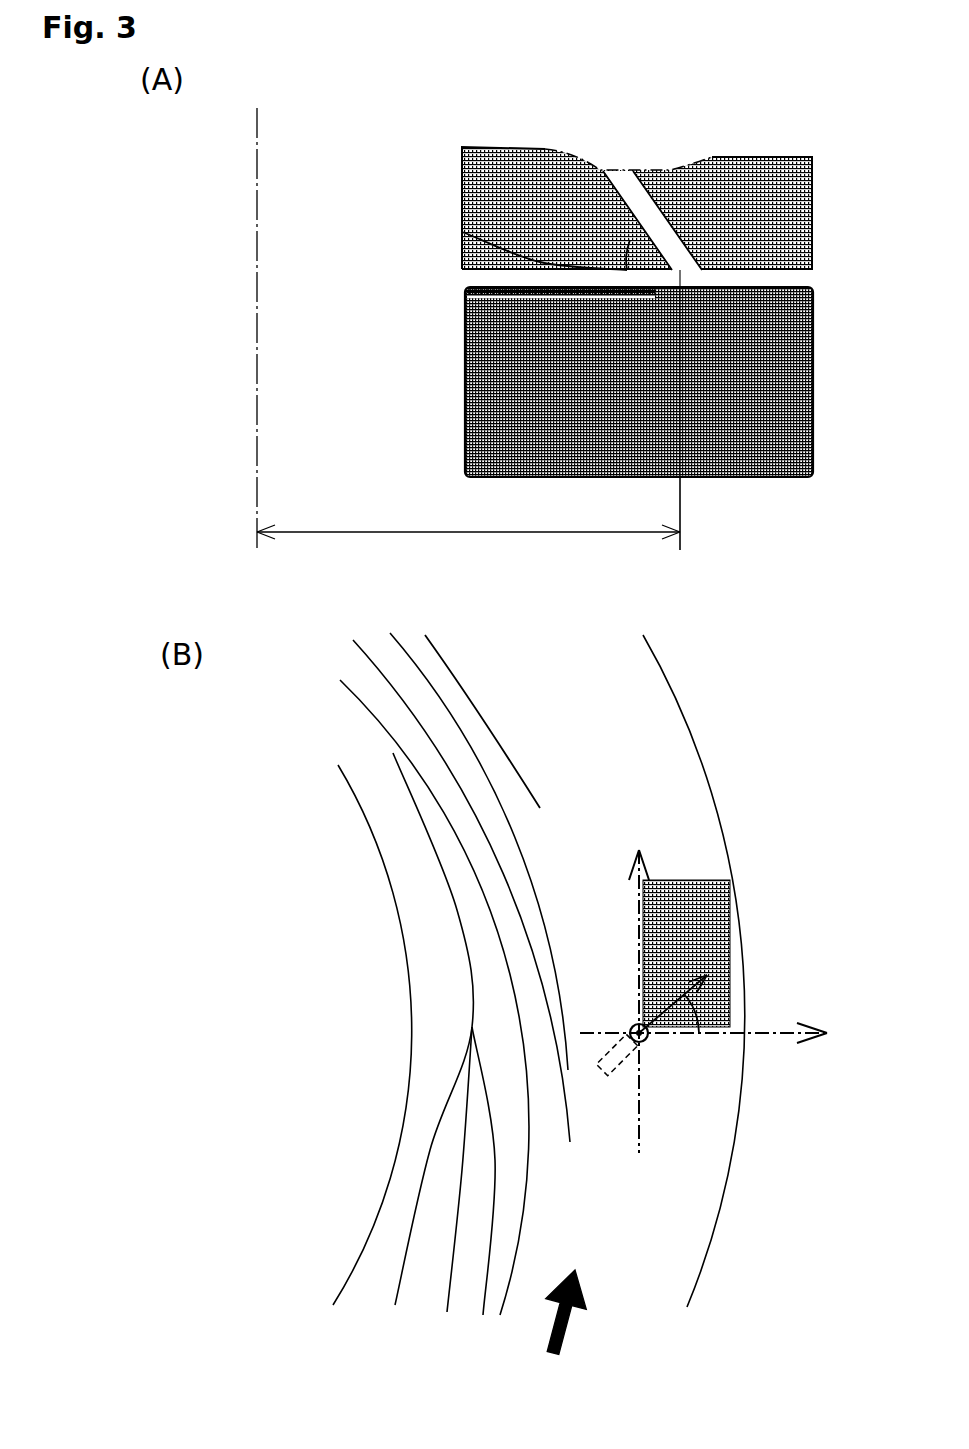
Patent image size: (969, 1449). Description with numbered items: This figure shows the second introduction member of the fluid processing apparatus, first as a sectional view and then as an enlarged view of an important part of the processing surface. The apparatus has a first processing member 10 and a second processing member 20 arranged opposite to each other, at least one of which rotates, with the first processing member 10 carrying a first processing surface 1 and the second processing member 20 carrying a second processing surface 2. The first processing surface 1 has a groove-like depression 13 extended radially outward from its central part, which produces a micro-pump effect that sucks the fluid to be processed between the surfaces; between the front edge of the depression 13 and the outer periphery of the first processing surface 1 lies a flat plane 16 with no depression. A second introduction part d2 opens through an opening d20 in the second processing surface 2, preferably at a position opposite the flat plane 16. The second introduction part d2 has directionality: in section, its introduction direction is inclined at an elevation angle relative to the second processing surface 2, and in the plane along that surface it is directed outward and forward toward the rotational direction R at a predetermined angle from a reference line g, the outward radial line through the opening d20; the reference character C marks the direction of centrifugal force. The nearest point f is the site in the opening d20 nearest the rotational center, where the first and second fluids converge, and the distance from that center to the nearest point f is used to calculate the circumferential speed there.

The first processing surface 1 is at (720, 287).
The second processing surface 2 is at (462, 232).
The first processing member 10 is at (467, 383).
The groove-like depression 13 is at (487, 300).
The flat plane 16 is at (567, 712).
The second processing member 20 is at (463, 200).
The second introduction part d2 is at (645, 213).
The opening d20 is at (690, 270).
The nearest point f is at (678, 531).
The direction of centrifugal force C is at (721, 1038).
The reference line g is at (762, 1038).
The rotational direction R is at (585, 1312).